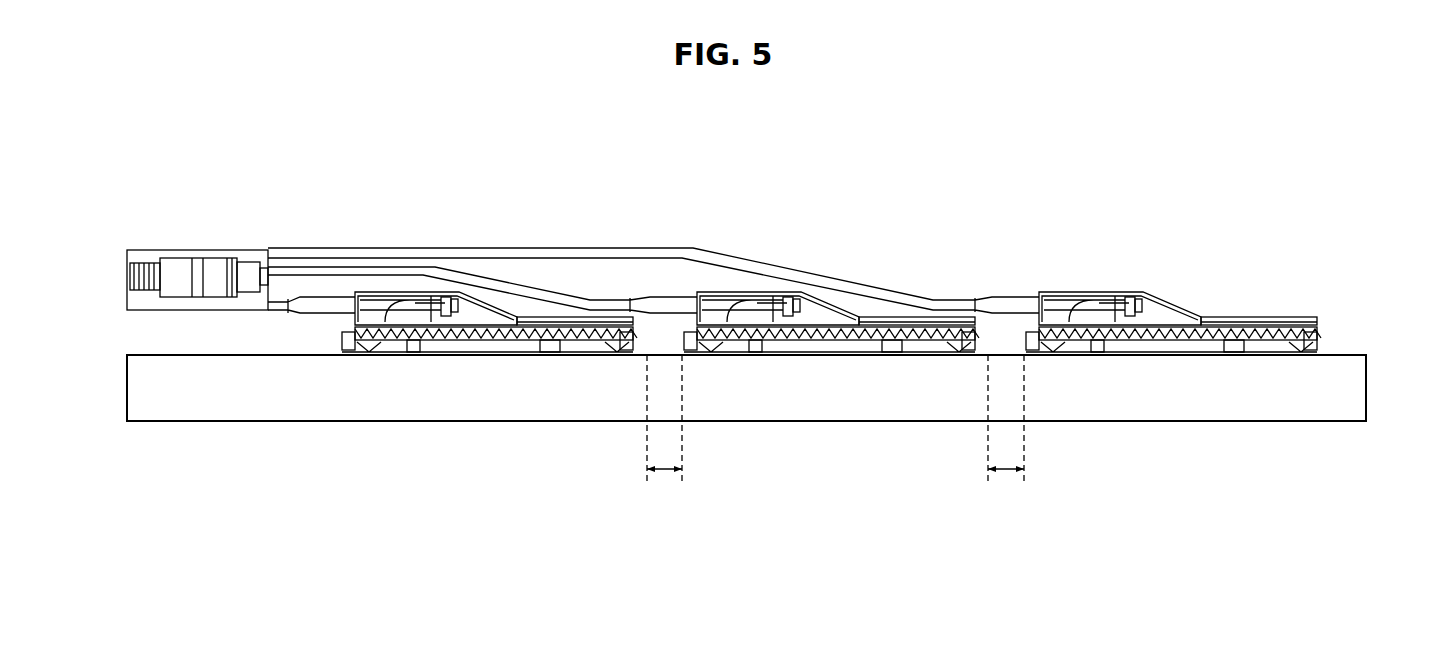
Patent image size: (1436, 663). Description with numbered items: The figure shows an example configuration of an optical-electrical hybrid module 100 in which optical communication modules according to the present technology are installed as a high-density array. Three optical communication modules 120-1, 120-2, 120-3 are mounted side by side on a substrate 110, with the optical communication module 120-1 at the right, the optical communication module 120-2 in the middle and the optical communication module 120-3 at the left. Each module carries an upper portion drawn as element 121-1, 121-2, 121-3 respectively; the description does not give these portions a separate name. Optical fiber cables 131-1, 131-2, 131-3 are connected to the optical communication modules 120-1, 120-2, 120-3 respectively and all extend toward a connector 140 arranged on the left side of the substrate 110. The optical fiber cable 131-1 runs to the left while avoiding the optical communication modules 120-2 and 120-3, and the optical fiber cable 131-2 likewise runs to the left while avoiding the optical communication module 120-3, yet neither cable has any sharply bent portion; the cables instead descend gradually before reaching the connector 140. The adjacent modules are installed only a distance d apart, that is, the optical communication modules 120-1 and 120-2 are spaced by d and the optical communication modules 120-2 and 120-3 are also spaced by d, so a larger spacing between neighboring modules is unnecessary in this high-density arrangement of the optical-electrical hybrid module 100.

The optical-electrical hybrid module 100 is at (874, 562).
The substrate 110 is at (1366, 405).
The optical communication module 120-1 is at (1173, 296).
The optical communication module 120-2 is at (831, 291).
The optical communication module 120-3 is at (489, 275).
The first optical connector housing 121-1 is at (1120, 282).
The second optical connector housing 121-2 is at (778, 267).
The third optical connector housing 121-3 is at (436, 262).
The optical fiber cable 131-1 is at (838, 278).
The optical fiber cable 131-2 is at (495, 278).
The optical fiber cable 131-3 is at (280, 313).
The connector 140 is at (203, 250).